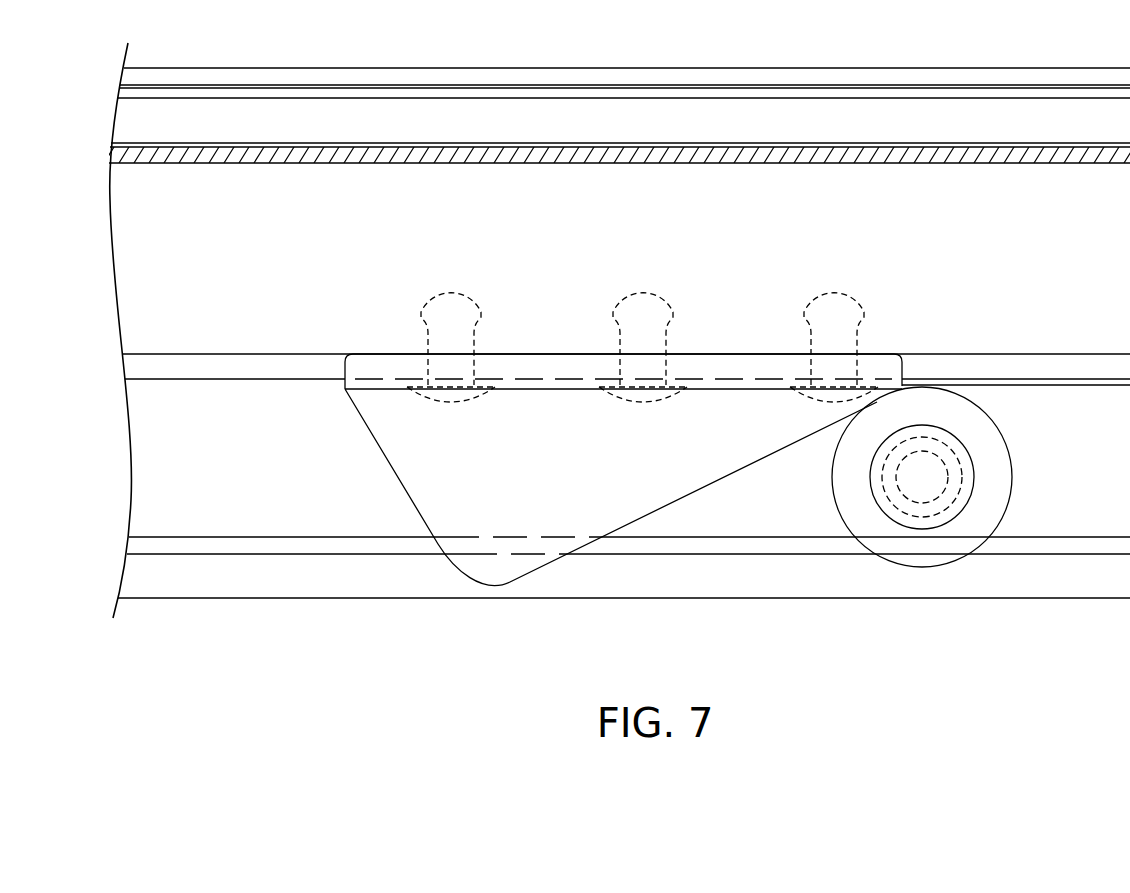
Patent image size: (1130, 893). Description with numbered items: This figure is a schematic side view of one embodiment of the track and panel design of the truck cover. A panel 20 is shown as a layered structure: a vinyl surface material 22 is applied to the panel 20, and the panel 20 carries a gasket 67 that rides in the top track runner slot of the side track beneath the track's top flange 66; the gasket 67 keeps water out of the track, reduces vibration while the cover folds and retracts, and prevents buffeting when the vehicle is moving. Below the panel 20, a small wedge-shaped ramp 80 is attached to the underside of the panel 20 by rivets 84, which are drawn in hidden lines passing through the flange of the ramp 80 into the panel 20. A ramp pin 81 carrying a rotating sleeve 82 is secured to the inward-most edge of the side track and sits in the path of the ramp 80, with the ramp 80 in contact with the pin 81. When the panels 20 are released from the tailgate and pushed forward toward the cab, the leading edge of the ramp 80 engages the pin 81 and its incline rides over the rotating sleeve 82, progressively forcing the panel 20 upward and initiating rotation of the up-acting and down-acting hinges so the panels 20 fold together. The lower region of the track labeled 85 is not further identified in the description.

The panel 20 is at (577, 237).
The vinyl surface material 22 is at (1077, 148).
The top flange 66 is at (428, 80).
The gasket 67 is at (714, 128).
The ramp 80 is at (573, 515).
The ramp pin 81 is at (920, 500).
The rotating sleeve 82 is at (948, 530).
The rivet 84 is at (439, 330).
The lower rail portion 85 is at (335, 512).